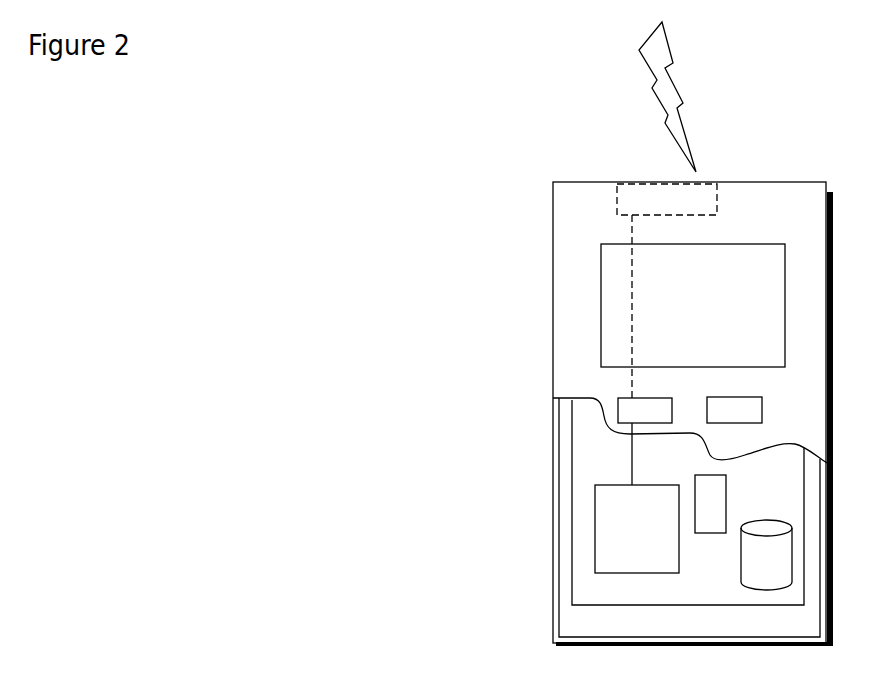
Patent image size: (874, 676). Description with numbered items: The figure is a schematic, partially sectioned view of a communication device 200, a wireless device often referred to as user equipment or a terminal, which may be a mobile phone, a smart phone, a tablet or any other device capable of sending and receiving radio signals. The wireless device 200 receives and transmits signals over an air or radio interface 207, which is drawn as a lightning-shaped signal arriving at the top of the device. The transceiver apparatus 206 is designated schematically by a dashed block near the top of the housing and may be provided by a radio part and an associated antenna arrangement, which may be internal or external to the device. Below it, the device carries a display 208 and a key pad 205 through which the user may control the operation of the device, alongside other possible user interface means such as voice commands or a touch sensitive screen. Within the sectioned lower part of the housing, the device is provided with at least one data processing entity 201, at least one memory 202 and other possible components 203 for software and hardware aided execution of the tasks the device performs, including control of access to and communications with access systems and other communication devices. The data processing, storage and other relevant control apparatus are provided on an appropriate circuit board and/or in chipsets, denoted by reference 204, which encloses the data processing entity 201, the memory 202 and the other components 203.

The communication device 200 is at (553, 221).
The data processing entity 201 is at (601, 513).
The memory 202 is at (759, 565).
The other possible components 203 is at (710, 490).
The circuit board and/or chipsets 204 is at (594, 590).
The key pad 205 is at (620, 411).
The transceiver apparatus 206 is at (705, 194).
The air or radio interface 207 is at (699, 115).
The display 208 is at (617, 293).